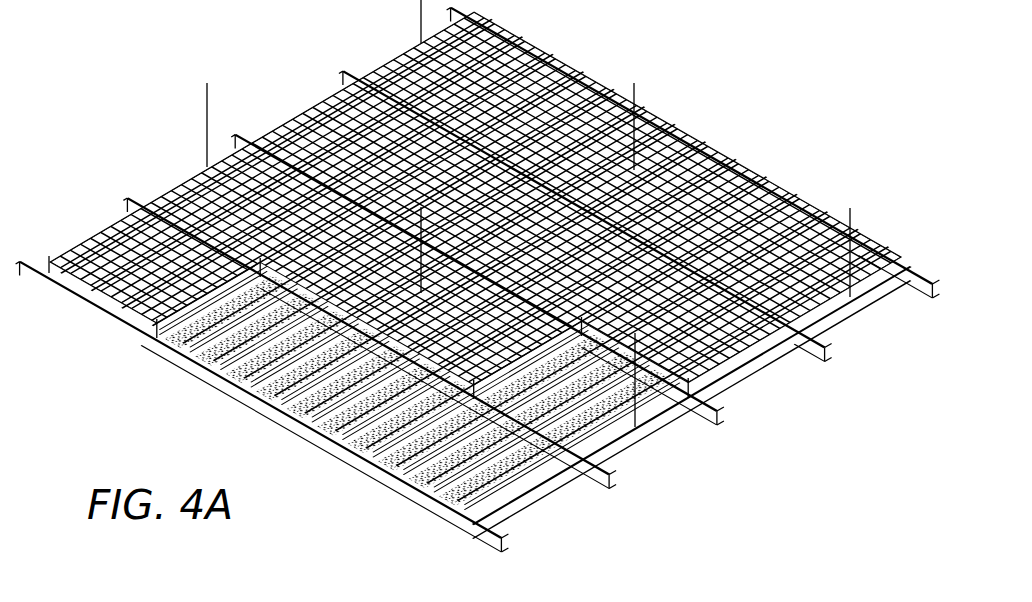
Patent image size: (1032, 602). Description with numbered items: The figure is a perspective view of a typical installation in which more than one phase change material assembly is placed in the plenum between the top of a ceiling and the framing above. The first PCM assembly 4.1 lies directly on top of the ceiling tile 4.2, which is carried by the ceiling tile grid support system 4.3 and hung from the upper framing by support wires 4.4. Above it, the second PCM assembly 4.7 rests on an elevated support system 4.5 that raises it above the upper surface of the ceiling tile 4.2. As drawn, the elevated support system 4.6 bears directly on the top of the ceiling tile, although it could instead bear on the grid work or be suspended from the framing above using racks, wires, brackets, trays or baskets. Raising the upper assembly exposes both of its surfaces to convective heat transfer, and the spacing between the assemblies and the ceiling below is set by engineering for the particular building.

The first PCM assembly 4.1 is at (760, 363).
The ceiling tile 4.2 is at (533, 491).
The ceiling tile grid support system 4.3 is at (862, 245).
The support wires 4.4 is at (646, 126).
The elevated support system 4.5 is at (438, 474).
The elevated support system bearing on ceiling tile 4.6 is at (603, 459).
The second PCM assembly 4.7 is at (783, 205).